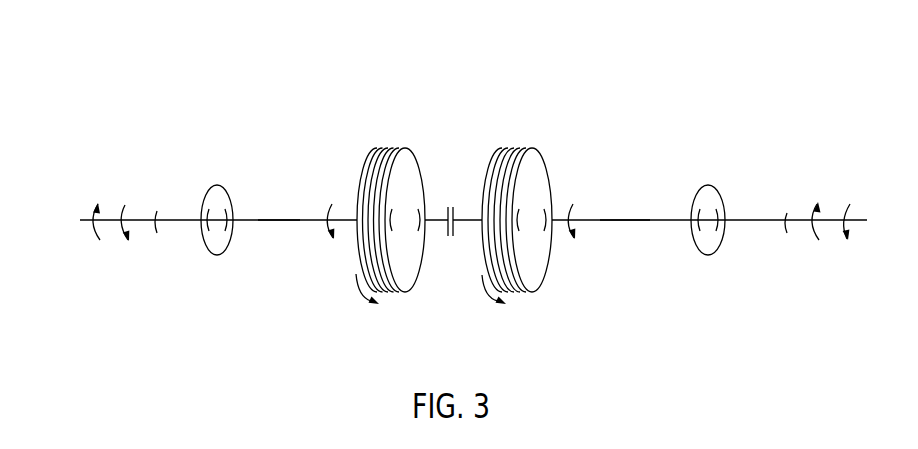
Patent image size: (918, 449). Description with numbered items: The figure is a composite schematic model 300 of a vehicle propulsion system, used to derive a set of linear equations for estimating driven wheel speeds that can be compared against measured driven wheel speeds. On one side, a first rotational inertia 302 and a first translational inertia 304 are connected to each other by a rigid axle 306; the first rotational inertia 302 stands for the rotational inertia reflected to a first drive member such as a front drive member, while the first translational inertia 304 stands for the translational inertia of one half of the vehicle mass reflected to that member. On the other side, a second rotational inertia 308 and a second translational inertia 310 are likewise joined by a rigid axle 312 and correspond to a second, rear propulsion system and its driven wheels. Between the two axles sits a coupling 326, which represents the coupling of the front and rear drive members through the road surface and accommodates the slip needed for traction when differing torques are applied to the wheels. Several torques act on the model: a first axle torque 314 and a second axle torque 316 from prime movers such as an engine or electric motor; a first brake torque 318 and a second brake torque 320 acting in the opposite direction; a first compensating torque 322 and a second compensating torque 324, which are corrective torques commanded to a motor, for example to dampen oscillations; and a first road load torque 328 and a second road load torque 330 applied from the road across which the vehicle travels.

The schematic model 300 is at (606, 79).
The first rotational inertia 302 is at (218, 186).
The first translational inertia 304 is at (407, 148).
The rigid axle 306 is at (275, 222).
The second rotational inertia 308 is at (705, 186).
The second translational inertia 310 is at (535, 150).
The rigid axle 312 is at (620, 218).
The first axle torque 314 is at (95, 211).
The second axle torque 316 is at (813, 218).
The first brake torque 318 is at (126, 205).
The second brake torque 320 is at (850, 204).
The first compensating torque 322 is at (332, 204).
The second compensating torque 324 is at (573, 204).
The coupling 326 is at (451, 250).
The first road load torque 328 is at (355, 294).
The second road load torque 330 is at (482, 277).